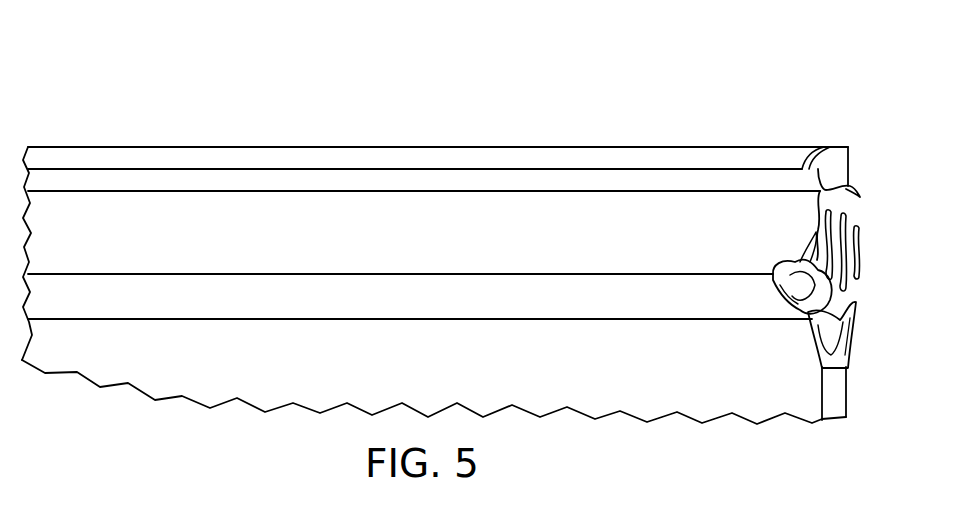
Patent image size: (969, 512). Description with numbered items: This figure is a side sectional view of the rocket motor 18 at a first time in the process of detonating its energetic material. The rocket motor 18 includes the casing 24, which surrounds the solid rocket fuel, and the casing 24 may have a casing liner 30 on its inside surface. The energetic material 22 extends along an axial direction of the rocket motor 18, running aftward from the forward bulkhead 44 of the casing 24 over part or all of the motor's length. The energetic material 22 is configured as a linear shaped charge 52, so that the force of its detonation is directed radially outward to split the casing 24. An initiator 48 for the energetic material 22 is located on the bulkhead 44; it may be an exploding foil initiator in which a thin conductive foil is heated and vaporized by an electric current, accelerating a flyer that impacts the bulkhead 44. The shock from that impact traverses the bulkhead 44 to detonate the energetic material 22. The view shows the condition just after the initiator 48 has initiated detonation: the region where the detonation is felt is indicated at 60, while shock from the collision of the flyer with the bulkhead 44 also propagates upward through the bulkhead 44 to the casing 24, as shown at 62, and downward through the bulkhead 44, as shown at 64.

The rocket motor 18 is at (434, 218).
The energetic material 22 is at (90, 303).
The casing 24 is at (428, 152).
The casing liner 30 is at (460, 188).
The forward bulkhead 44 is at (840, 398).
The initiator 48 is at (858, 268).
The linear shaped charge 52 is at (415, 154).
The detonation region 60 is at (847, 285).
The upward shock propagation 62 is at (834, 147).
The downward shock propagation 64 is at (848, 346).